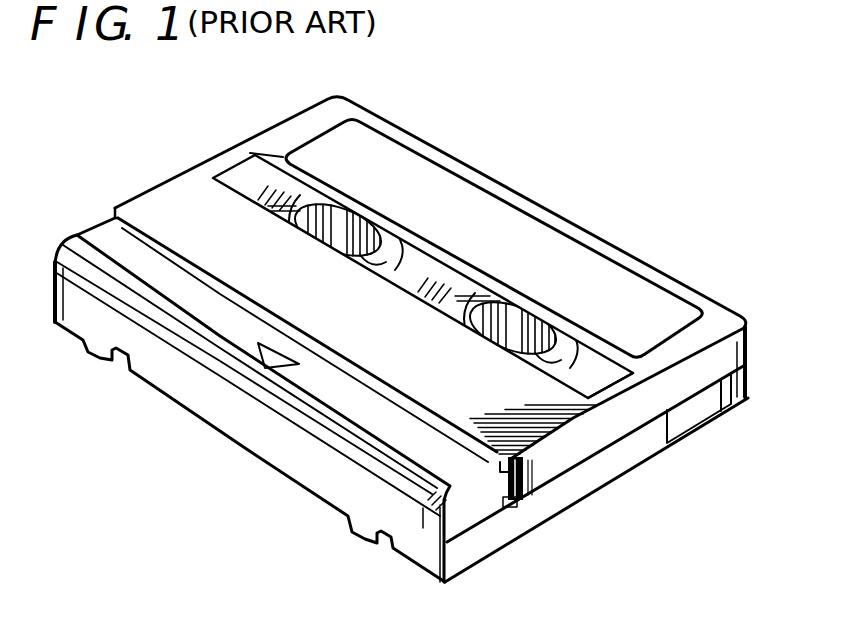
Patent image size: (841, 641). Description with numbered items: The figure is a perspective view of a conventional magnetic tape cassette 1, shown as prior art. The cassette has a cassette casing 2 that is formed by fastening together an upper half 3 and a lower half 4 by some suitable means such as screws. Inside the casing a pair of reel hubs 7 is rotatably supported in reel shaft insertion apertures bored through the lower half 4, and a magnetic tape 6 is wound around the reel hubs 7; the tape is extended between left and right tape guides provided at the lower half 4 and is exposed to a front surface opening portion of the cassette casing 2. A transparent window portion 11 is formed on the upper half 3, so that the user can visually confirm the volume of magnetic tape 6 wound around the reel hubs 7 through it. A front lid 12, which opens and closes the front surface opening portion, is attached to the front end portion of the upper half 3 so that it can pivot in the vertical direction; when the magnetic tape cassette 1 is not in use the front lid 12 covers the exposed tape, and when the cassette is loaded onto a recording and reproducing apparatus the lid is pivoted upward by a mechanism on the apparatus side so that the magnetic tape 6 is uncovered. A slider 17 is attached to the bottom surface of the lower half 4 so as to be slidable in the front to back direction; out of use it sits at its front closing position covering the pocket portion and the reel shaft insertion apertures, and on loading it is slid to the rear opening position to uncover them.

The magnetic tape cassette 1 is at (425, 324).
The cassette casing 2 is at (683, 285).
The upper half 3 is at (750, 342).
The lower half 4 is at (620, 477).
The magnetic tape 6 is at (418, 265).
The reel hubs 7 is at (337, 220).
The transparent window portion 11 is at (593, 372).
The front lid 12 is at (213, 413).
The slider 17 is at (602, 488).